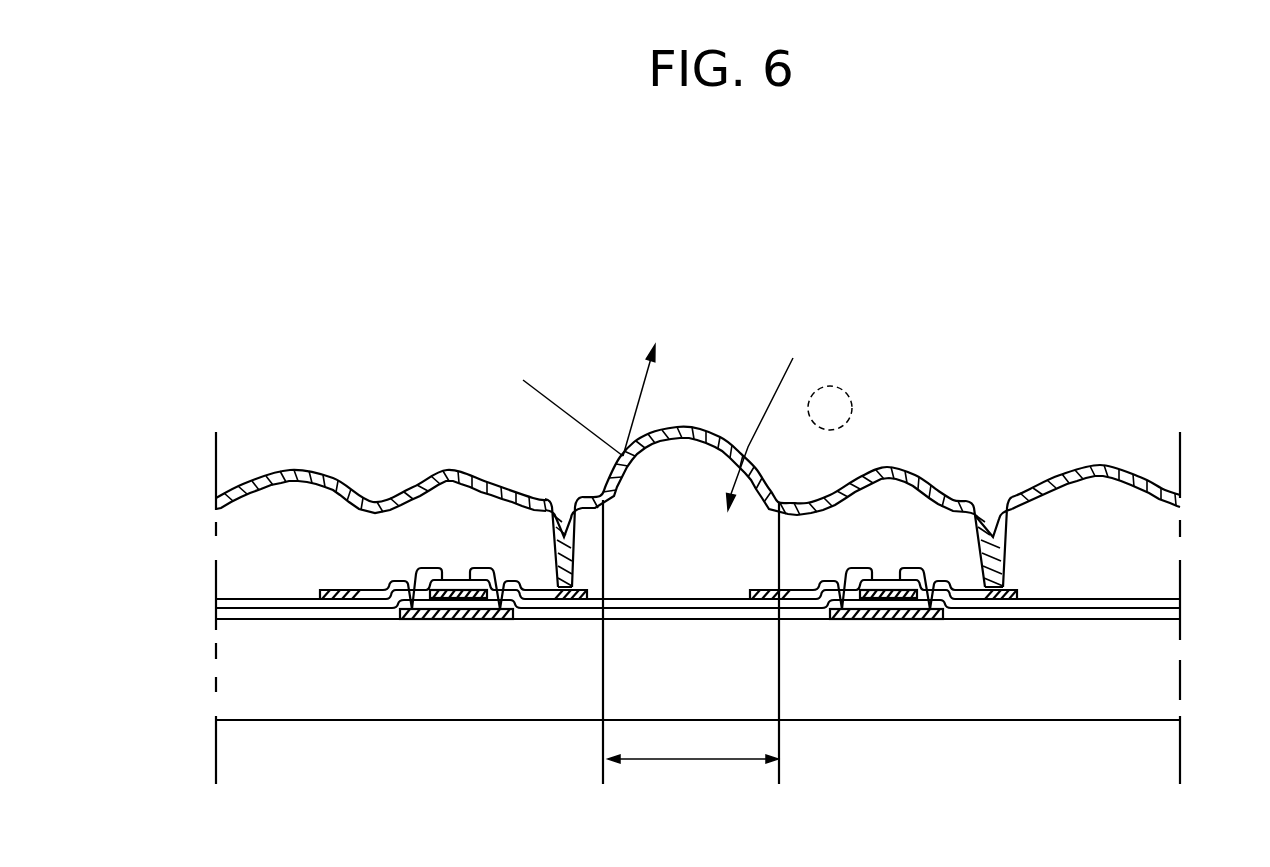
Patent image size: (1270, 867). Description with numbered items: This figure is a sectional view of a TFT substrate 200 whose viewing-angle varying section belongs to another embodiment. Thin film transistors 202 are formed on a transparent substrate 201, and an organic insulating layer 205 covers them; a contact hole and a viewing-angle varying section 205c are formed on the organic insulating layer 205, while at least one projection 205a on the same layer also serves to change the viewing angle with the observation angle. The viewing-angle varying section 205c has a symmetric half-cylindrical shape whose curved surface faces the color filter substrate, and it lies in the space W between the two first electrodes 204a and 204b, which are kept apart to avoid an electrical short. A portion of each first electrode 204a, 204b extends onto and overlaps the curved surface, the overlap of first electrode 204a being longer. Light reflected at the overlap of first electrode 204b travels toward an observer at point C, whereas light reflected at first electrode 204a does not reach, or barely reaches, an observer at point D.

The organic light emitting display device 200 is at (1113, 345).
The transparent substrate 201 is at (1178, 668).
The thin film transistor 202 is at (459, 641).
The first electrode 204a is at (975, 530).
The first electrode 204b is at (290, 484).
The organic insulating layer 205 is at (1178, 547).
The projection 205a is at (470, 498).
The viewing-angle varying section 205c is at (708, 434).